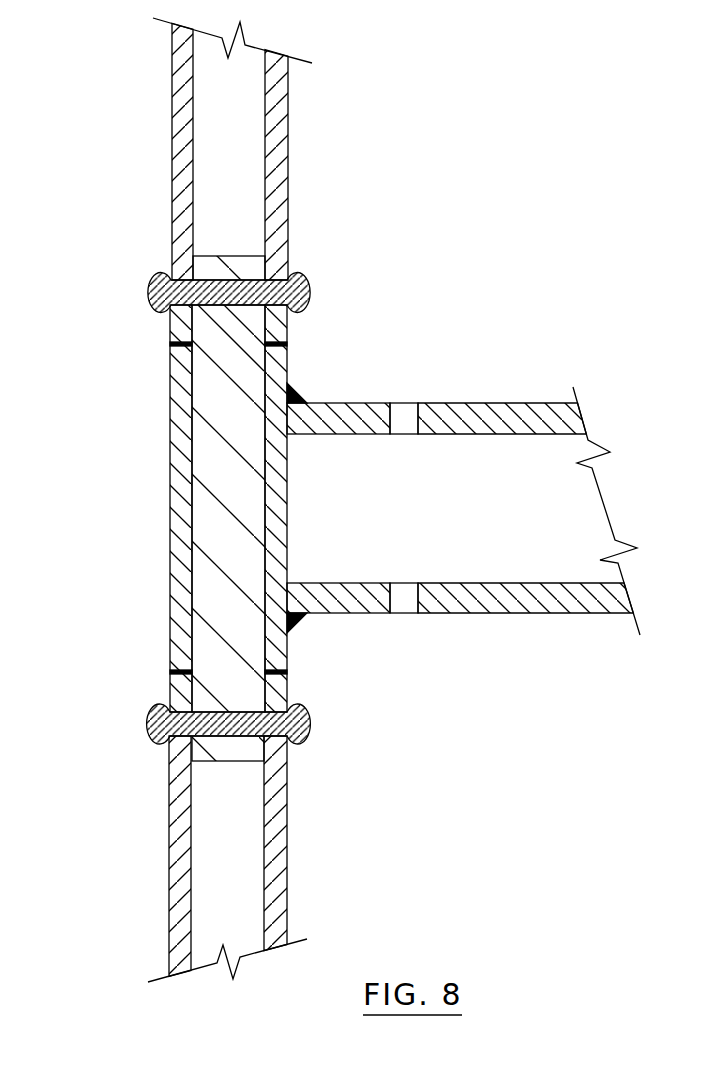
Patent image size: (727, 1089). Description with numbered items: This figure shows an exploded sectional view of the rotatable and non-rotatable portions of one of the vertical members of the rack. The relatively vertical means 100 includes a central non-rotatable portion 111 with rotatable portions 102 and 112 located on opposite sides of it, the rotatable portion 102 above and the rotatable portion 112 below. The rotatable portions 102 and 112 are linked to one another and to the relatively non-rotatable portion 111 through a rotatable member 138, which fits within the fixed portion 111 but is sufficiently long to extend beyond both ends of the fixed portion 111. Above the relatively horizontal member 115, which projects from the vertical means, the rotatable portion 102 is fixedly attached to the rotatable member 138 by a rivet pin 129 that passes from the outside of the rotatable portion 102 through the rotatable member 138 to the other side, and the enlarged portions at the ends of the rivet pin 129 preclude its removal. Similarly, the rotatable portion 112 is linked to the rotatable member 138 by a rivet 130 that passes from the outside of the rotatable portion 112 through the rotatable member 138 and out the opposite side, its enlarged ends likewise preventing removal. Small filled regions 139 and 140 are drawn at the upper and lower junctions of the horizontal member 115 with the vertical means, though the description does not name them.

The relatively vertical means 100 is at (209, 500).
The rotatable portion 102 is at (290, 118).
The non-rotatable portion 111 is at (168, 443).
The rotatable portion 112 is at (287, 848).
The relatively horizontal member 115 is at (445, 403).
The rivet pin 129 is at (293, 276).
The rivet 130 is at (305, 712).
The rotatable member 138 is at (230, 256).
The upper fillet weld 139 is at (293, 393).
The lower fillet weld 140 is at (297, 632).